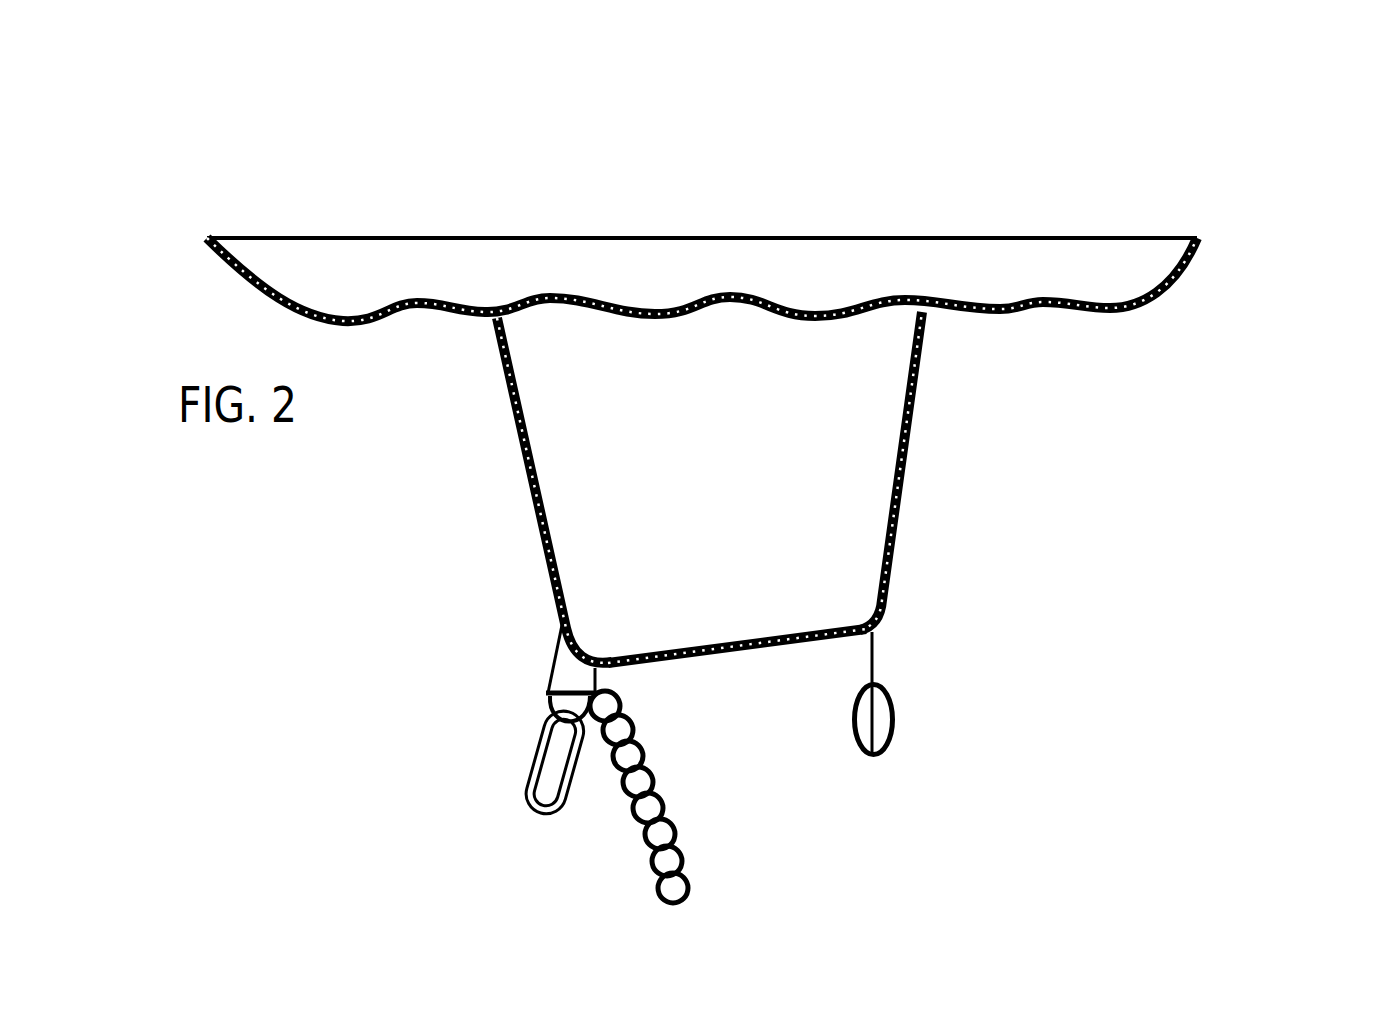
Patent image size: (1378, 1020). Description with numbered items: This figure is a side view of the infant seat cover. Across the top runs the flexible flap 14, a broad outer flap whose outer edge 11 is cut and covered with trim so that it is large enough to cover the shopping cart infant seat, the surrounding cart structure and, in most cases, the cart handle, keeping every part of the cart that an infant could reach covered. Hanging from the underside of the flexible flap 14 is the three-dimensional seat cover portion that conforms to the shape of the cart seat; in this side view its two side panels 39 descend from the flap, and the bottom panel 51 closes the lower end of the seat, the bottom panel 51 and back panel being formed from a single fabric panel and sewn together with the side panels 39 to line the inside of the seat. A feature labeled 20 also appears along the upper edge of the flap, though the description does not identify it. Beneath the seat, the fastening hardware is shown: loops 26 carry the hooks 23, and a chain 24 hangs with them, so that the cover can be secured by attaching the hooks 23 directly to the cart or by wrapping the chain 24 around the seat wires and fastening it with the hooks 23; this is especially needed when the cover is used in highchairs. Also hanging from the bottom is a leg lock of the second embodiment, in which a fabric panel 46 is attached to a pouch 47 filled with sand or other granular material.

The outer edge 11 is at (778, 265).
The flexible flap 14 is at (702, 184).
The top edge of tray 20 is at (702, 143).
The hooks 23 is at (522, 767).
The chain 24 is at (638, 838).
The loops 26 is at (548, 693).
The side panels 39 is at (821, 536).
The fabric panel 46 is at (1012, 724).
The pouch 47 is at (1030, 791).
The bottom panel 51 is at (760, 767).